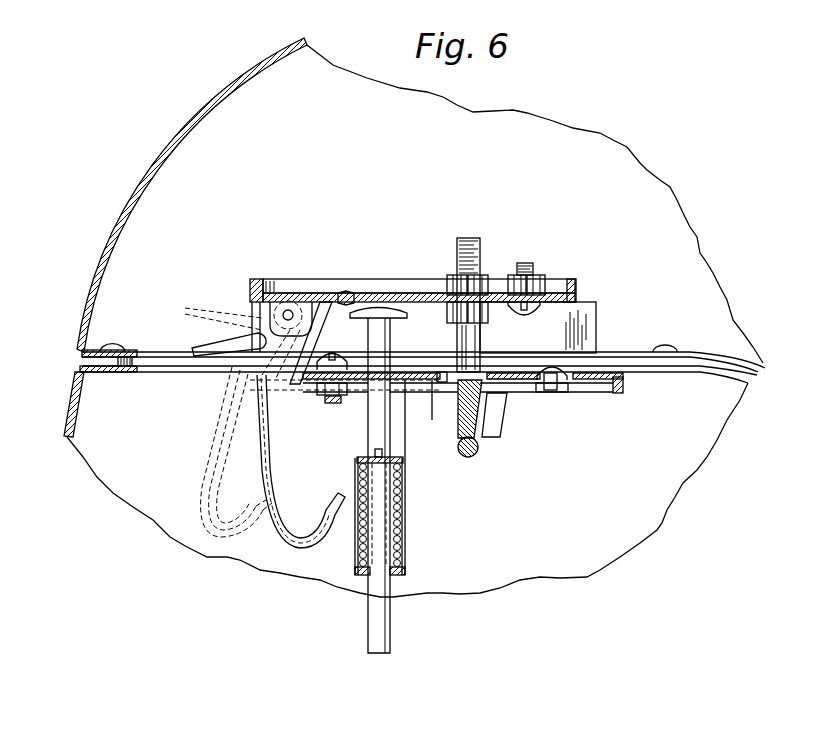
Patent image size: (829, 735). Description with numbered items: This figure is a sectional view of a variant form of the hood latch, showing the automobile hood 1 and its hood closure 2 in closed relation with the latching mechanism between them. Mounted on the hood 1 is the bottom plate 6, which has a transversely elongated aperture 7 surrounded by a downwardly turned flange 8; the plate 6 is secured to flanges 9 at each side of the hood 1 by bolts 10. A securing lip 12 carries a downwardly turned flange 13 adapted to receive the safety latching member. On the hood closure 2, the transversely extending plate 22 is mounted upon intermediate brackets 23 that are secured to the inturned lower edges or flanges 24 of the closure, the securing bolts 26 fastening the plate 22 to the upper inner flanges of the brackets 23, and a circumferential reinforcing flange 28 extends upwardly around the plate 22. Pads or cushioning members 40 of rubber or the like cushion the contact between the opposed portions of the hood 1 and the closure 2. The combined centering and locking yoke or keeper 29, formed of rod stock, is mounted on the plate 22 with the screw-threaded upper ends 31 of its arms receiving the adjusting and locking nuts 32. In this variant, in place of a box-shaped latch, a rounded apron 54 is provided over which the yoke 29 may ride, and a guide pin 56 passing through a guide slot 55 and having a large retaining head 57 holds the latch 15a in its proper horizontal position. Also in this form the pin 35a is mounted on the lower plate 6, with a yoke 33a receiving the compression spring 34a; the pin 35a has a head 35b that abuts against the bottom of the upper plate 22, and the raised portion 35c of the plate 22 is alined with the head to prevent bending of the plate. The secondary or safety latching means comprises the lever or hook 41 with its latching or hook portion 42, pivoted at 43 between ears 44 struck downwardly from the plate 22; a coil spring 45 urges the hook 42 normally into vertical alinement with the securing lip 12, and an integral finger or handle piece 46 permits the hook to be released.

The automobile hood 1 is at (68, 417).
The hood closure 2 is at (182, 146).
The bottom plate 6 is at (421, 382).
The transversely elongated aperture 7 is at (450, 377).
The downwardly turned flange 8 is at (437, 374).
The flanges 9 is at (108, 378).
The bolts 10 is at (333, 404).
The securing lip 12 is at (297, 392).
The downwardly turned flange 13 is at (303, 389).
The latch 15a is at (580, 385).
The transversely extending plate 22 is at (426, 296).
The intermediate brackets 23 is at (582, 320).
The inturned lower edges or flanges 24 is at (128, 350).
The securing bolts 26 is at (530, 265).
The circumferential reinforcing flange 28 is at (258, 280).
The combined centering and locking yoke or keeper 29 is at (462, 402).
The screw-threaded upper ends 31 is at (470, 239).
The adjusting and locking nuts 32 is at (480, 282).
The yoke 33a is at (408, 553).
The compression spring 34a is at (402, 506).
The pin 35a is at (392, 628).
The head 35b is at (405, 315).
The raised portion 35c is at (352, 298).
The pads or cushioning members 40 is at (95, 363).
The lever or hook 41 is at (215, 437).
The latching or hook portion 42 is at (336, 506).
The pivot 43 is at (289, 308).
The ears 44 is at (305, 300).
The coil spring 45 is at (314, 322).
The finger or handle piece 46 is at (184, 311).
The rounded apron 54 is at (458, 436).
The guide slot 55 is at (518, 395).
The guide pin 56 is at (548, 383).
The retaining head 57 is at (560, 388).